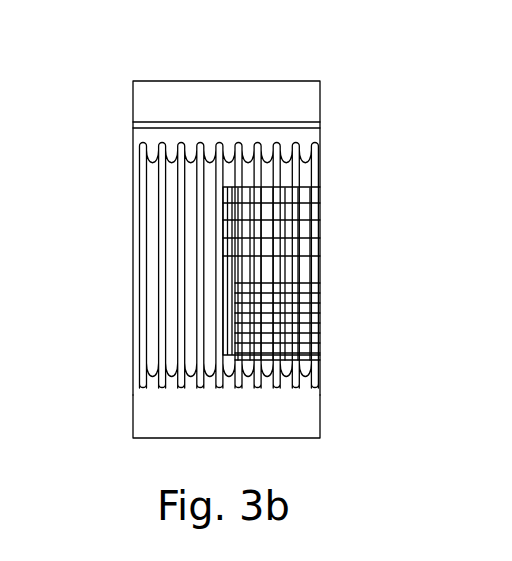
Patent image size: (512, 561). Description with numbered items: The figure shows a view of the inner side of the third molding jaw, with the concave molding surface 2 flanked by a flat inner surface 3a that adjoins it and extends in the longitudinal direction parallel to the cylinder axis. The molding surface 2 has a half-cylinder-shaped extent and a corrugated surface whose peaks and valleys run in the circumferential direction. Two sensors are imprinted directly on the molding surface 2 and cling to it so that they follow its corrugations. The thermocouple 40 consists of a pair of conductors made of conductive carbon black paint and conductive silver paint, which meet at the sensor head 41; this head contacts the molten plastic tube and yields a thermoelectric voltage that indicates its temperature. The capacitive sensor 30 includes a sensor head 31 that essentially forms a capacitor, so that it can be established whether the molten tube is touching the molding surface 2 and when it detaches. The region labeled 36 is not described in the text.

The molding surface 2 is at (178, 273).
The inner surface 3a is at (250, 103).
The lower header tank 36 is at (290, 421).
The thermocouple 40 is at (254, 236).
The sensor head 41 is at (306, 203).
The capacitive sensor 30 is at (322, 286).
The sensor head 31 is at (322, 323).